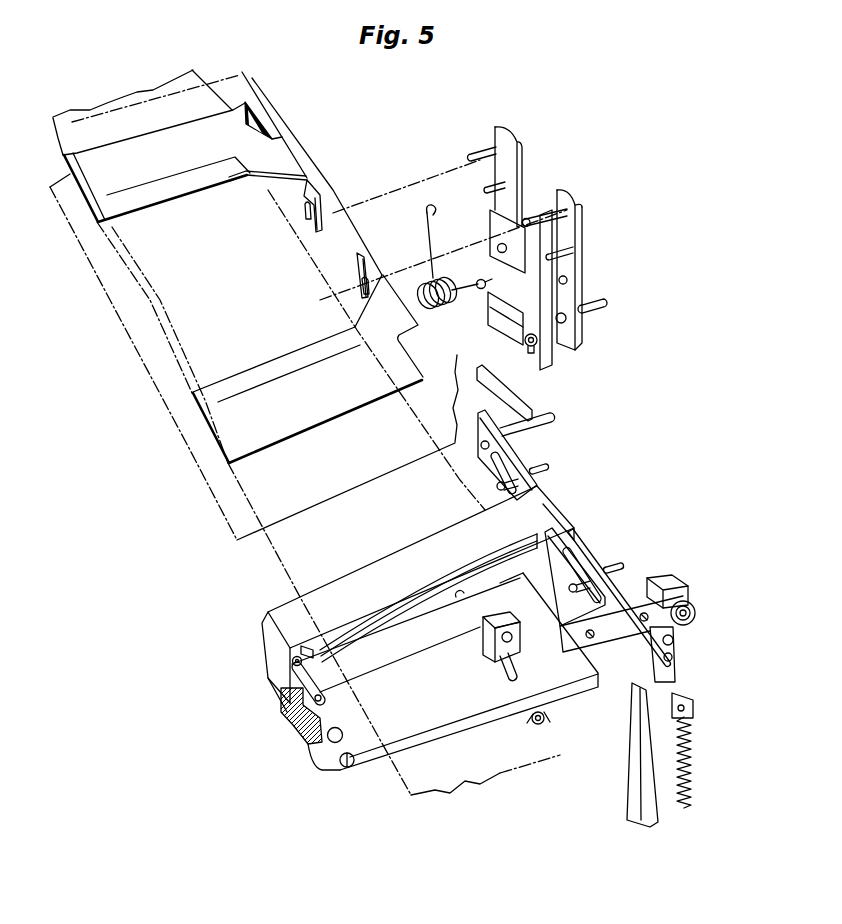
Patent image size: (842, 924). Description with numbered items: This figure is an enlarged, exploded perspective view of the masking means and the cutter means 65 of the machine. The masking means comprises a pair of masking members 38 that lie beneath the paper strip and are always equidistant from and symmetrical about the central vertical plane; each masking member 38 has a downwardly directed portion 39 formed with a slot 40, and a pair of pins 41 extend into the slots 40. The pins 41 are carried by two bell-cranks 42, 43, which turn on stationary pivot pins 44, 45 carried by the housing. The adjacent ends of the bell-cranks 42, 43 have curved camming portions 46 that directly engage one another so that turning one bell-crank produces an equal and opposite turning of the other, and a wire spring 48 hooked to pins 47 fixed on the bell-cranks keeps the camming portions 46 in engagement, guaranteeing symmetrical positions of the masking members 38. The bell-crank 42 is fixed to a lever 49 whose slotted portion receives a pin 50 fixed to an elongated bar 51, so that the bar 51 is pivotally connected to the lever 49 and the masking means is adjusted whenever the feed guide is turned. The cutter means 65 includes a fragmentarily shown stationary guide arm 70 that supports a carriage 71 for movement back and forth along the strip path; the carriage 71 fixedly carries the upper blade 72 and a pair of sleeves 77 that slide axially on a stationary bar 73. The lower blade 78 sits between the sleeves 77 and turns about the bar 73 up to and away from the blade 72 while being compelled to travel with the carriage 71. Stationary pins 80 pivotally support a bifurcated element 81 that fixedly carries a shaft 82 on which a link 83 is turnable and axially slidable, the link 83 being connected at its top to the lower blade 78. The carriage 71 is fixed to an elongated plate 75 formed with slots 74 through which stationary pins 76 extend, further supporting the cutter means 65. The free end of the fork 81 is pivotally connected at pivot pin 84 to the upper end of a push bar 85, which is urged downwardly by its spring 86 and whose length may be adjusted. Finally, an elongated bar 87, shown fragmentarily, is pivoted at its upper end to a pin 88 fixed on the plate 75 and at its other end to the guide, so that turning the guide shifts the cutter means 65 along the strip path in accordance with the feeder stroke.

The masking members 38 is at (167, 160).
The downwardly directed portion 39 is at (303, 195).
The slot 40 is at (305, 212).
The pins 41 is at (473, 155).
The bell-crank 42 is at (512, 170).
The bell-crank 43 is at (573, 219).
The stationary pivot pin 44 is at (498, 249).
The stationary pivot pin 45 is at (601, 307).
The curved camming portions 46 is at (480, 288).
The pins 47 is at (489, 185).
The wire spring 48 is at (436, 311).
The lever 49 is at (553, 325).
The pin 50 is at (528, 349).
The elongated bar 51 is at (507, 328).
The cutter means 65 is at (310, 771).
The stationary guide arm 70 is at (310, 733).
The carriage 71 is at (292, 614).
The upper blade 72 is at (430, 580).
The stationary bar 73 is at (300, 688).
The slots 74 is at (495, 463).
The elongated plate 75 is at (573, 533).
The stationary pins 76 is at (546, 470).
The sleeves 77 is at (293, 666).
The lower blade 78 is at (395, 647).
The stationary pins 80 is at (340, 733).
The bifurcated element 81 is at (572, 710).
The shaft 82 is at (513, 685).
The link 83 is at (512, 652).
The pivot pin 84 is at (683, 602).
The push bar 85 is at (643, 789).
The spring 86 is at (673, 799).
The elongated bar 87 is at (458, 401).
The pin 88 is at (535, 428).